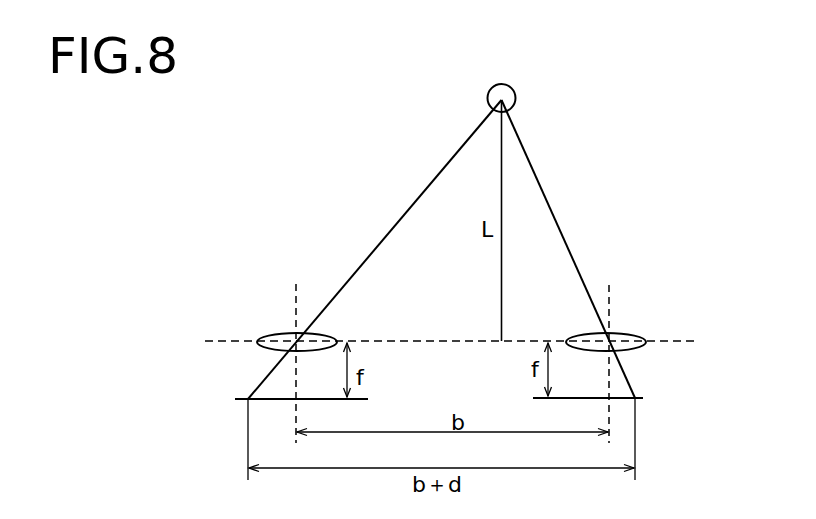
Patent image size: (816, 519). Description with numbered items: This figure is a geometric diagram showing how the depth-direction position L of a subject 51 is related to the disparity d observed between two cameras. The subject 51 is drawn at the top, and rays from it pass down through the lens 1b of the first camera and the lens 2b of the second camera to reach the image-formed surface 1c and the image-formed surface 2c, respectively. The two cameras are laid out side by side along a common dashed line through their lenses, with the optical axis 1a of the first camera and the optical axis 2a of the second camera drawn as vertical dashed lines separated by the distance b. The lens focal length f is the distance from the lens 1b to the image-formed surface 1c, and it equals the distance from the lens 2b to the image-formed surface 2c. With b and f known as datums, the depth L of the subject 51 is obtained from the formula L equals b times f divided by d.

The subject 51 is at (487, 96).
The optical axis 1a is at (296, 304).
The lens 1b is at (258, 341).
The image-formed surface 1c is at (276, 400).
The optical axis 2a is at (610, 296).
The lens 2b is at (624, 349).
The image-formed surface 2c is at (620, 400).